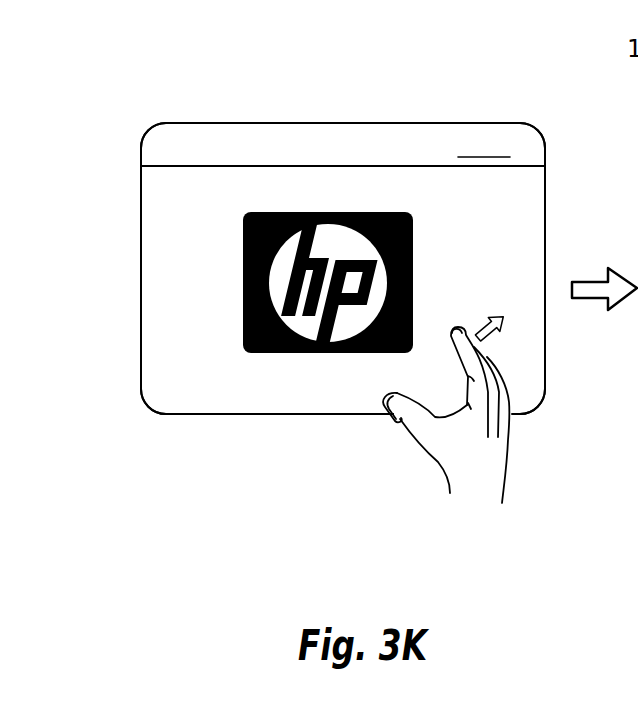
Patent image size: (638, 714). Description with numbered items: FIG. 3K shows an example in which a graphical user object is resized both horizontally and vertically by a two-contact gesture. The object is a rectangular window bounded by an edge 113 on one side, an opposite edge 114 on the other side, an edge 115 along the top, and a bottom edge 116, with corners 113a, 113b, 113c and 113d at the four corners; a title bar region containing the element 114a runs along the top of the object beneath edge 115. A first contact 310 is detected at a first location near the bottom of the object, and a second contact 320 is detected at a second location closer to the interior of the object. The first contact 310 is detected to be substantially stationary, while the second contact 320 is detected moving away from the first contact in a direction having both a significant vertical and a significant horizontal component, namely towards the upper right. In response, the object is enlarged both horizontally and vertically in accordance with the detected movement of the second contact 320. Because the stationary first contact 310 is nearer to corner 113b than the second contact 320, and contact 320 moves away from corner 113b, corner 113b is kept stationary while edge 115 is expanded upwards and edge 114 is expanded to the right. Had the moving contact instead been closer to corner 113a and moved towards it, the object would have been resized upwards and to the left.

The edge 113 is at (141, 247).
The corner 113a is at (142, 143).
The corner 113b is at (153, 411).
The top-right corner of window 113c is at (533, 127).
The bottom-right corner of window 113d is at (538, 414).
The edge 114 is at (545, 248).
The title bar control 114a is at (484, 144).
The edge 115 is at (348, 123).
The bottom edge 116 is at (318, 415).
The first contact 310 is at (394, 393).
The second contact 320 is at (452, 328).